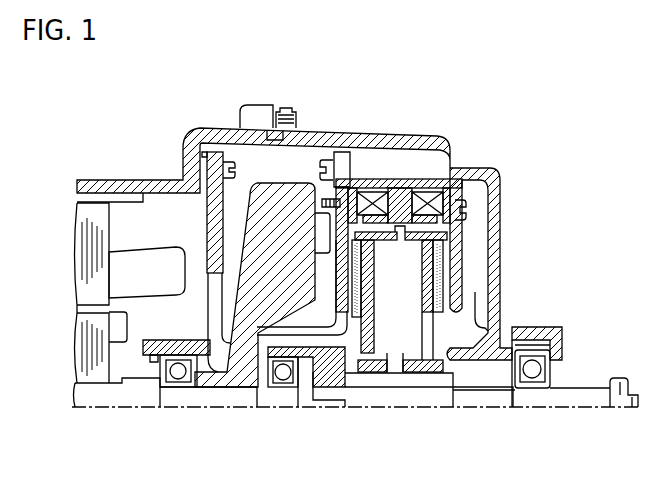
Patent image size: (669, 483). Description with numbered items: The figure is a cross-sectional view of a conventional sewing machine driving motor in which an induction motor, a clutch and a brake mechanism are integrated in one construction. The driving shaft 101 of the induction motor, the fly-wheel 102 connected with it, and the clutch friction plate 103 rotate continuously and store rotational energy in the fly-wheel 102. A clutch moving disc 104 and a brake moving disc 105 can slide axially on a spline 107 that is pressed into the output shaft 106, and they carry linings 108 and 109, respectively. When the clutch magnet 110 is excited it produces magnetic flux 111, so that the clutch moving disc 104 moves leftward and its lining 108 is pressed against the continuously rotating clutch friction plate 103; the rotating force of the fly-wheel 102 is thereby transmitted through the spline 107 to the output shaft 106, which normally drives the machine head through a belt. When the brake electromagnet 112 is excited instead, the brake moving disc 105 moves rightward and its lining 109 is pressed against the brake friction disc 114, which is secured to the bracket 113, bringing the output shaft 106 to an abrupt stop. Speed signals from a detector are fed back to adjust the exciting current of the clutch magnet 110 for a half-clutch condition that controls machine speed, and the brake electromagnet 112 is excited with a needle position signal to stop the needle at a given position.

The driving shaft 101 is at (212, 395).
The fly-wheel 102 is at (253, 188).
The clutch friction plate 103 is at (330, 232).
The clutch moving disc 104 is at (387, 373).
The brake moving disc 105 is at (497, 395).
The output shaft 106 is at (540, 392).
The spline 107 is at (425, 385).
The lining 108 is at (360, 275).
The lining 109 is at (467, 287).
The clutch magnet 110 is at (376, 190).
The magnetic flux 111 is at (344, 192).
The brake electromagnet 112 is at (432, 190).
The bracket 113 is at (490, 167).
The brake friction disc 114 is at (465, 217).